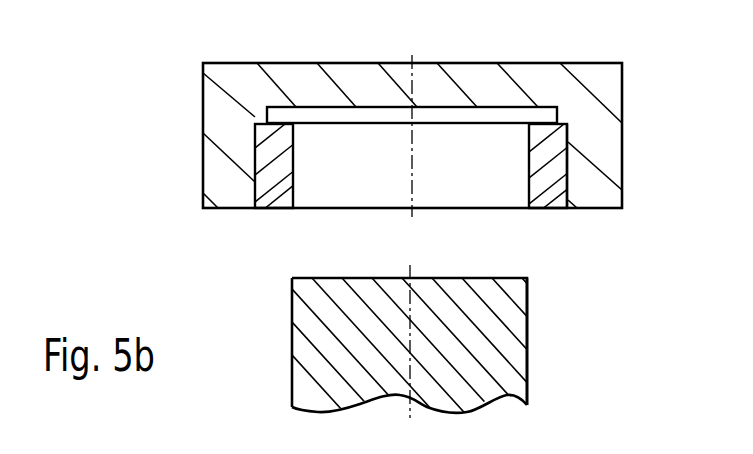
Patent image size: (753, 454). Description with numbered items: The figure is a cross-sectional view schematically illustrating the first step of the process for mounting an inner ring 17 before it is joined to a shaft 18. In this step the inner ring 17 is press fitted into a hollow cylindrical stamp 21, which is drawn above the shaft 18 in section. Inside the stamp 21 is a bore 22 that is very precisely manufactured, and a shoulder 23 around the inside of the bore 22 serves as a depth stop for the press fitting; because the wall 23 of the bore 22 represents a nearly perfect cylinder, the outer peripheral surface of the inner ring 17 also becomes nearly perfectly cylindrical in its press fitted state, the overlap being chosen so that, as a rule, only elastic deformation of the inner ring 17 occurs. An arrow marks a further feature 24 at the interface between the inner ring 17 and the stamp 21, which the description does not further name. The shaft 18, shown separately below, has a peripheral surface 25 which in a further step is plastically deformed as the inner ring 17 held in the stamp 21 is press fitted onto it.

The inner ring 17 is at (520, 107).
The shaft 18 is at (447, 360).
The hollow cylindrical stamp 21 is at (412, 104).
The bore of the stamp 22 is at (412, 79).
The shoulder 23 is at (251, 108).
The interface gap 24 is at (506, 166).
The peripheral surface of the shaft 25 is at (575, 341).